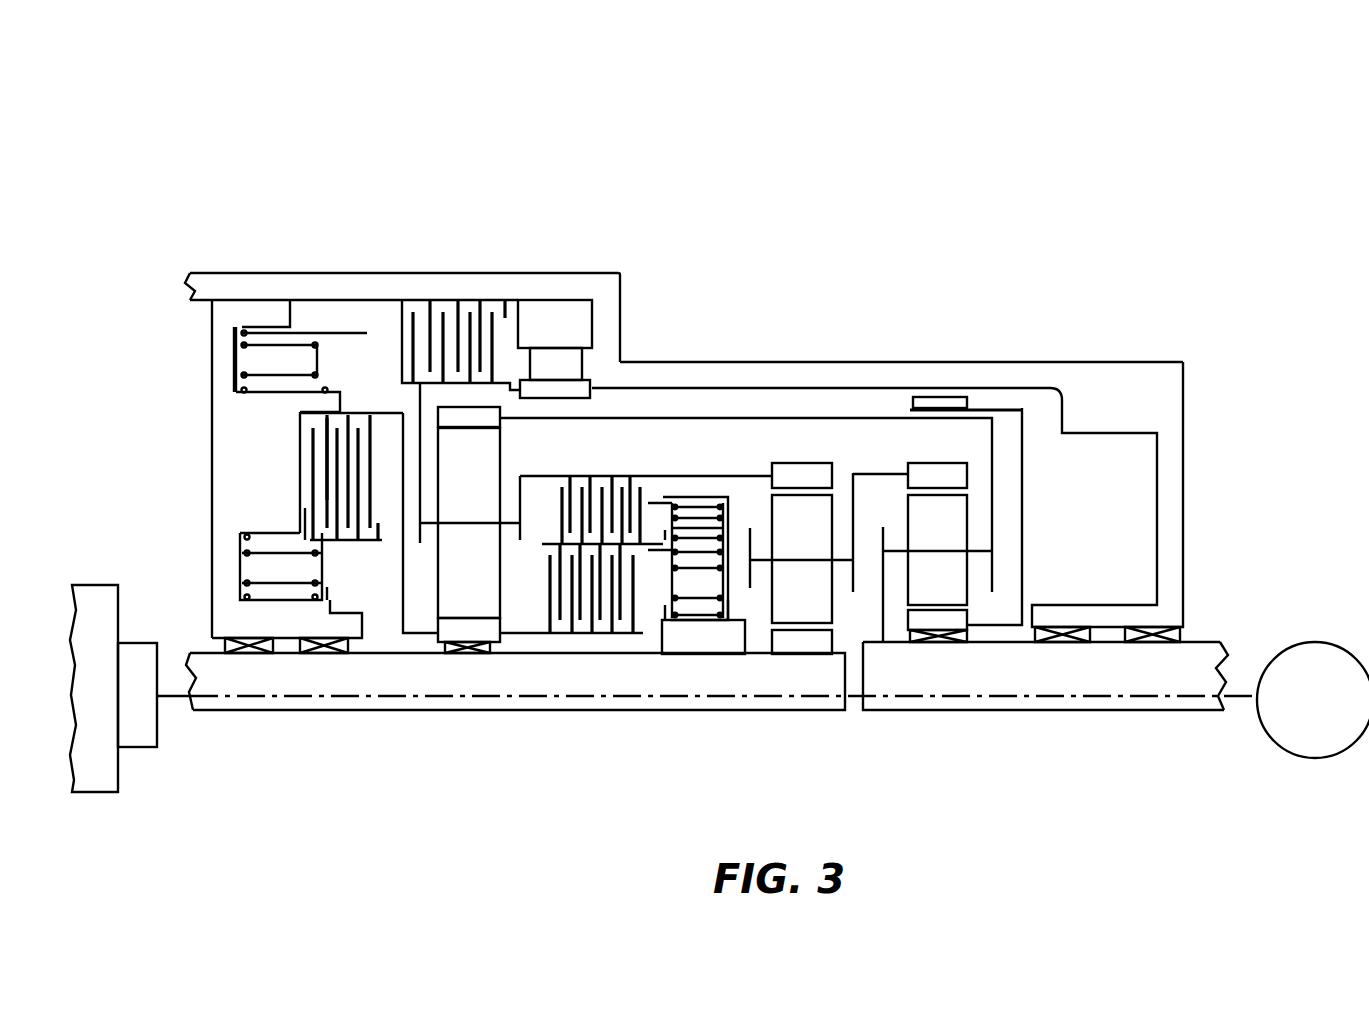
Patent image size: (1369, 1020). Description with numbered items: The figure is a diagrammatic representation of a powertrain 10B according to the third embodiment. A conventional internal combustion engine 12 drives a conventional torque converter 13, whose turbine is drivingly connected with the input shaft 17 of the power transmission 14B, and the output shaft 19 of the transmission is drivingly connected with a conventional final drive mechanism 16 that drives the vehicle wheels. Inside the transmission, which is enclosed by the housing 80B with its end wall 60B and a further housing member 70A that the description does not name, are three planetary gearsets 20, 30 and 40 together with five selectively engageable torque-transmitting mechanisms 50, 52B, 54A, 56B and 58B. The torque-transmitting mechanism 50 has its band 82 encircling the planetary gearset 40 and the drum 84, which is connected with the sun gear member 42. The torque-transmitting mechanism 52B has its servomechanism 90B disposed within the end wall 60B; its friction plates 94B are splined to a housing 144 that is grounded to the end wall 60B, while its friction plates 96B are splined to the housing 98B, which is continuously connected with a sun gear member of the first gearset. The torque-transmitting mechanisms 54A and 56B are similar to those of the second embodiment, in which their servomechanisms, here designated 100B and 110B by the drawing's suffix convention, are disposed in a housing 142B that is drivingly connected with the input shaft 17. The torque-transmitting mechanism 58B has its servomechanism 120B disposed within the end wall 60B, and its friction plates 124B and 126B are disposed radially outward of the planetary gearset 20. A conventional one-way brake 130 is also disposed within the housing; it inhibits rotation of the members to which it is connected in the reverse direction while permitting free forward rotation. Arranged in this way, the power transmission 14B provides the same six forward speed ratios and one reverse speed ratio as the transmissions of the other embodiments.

The powertrain 10B is at (248, 192).
The internal combustion engine 12 is at (106, 580).
The torque converter 13 is at (160, 639).
The power transmission 14B is at (708, 270).
The final drive mechanism 16 is at (1345, 641).
The input shaft 17 is at (222, 712).
The output shaft 19 is at (1140, 712).
The planetary gearset 20 is at (468, 660).
The planetary gearset 30 is at (797, 662).
The planetary gearset 40 is at (938, 654).
The sun gear member 42 is at (955, 623).
The torque-transmitting mechanism 50 is at (941, 392).
The torque-transmitting mechanism 52B is at (335, 622).
The torque-transmitting mechanism 54A is at (587, 661).
The torque-transmitting mechanism 56B is at (615, 470).
The torque-transmitting mechanism 58B is at (352, 262).
The end wall 60B is at (206, 421).
The housing member 70A is at (1190, 440).
The housing corner 80B is at (622, 274).
The band 82 is at (928, 402).
The drum 84 is at (1023, 453).
The servomechanism 90B is at (285, 606).
The friction plates 94B is at (313, 466).
The friction plates 96B is at (367, 445).
The housing 98B is at (403, 590).
The hub support 100B is at (695, 662).
The clutch 110B is at (698, 490).
The servomechanism 120B is at (263, 316).
The friction plates 124B is at (418, 325).
The friction plates 126B is at (440, 325).
The one-way brake 130 is at (559, 297).
The hub 142B is at (733, 613).
The housing 144 is at (327, 545).